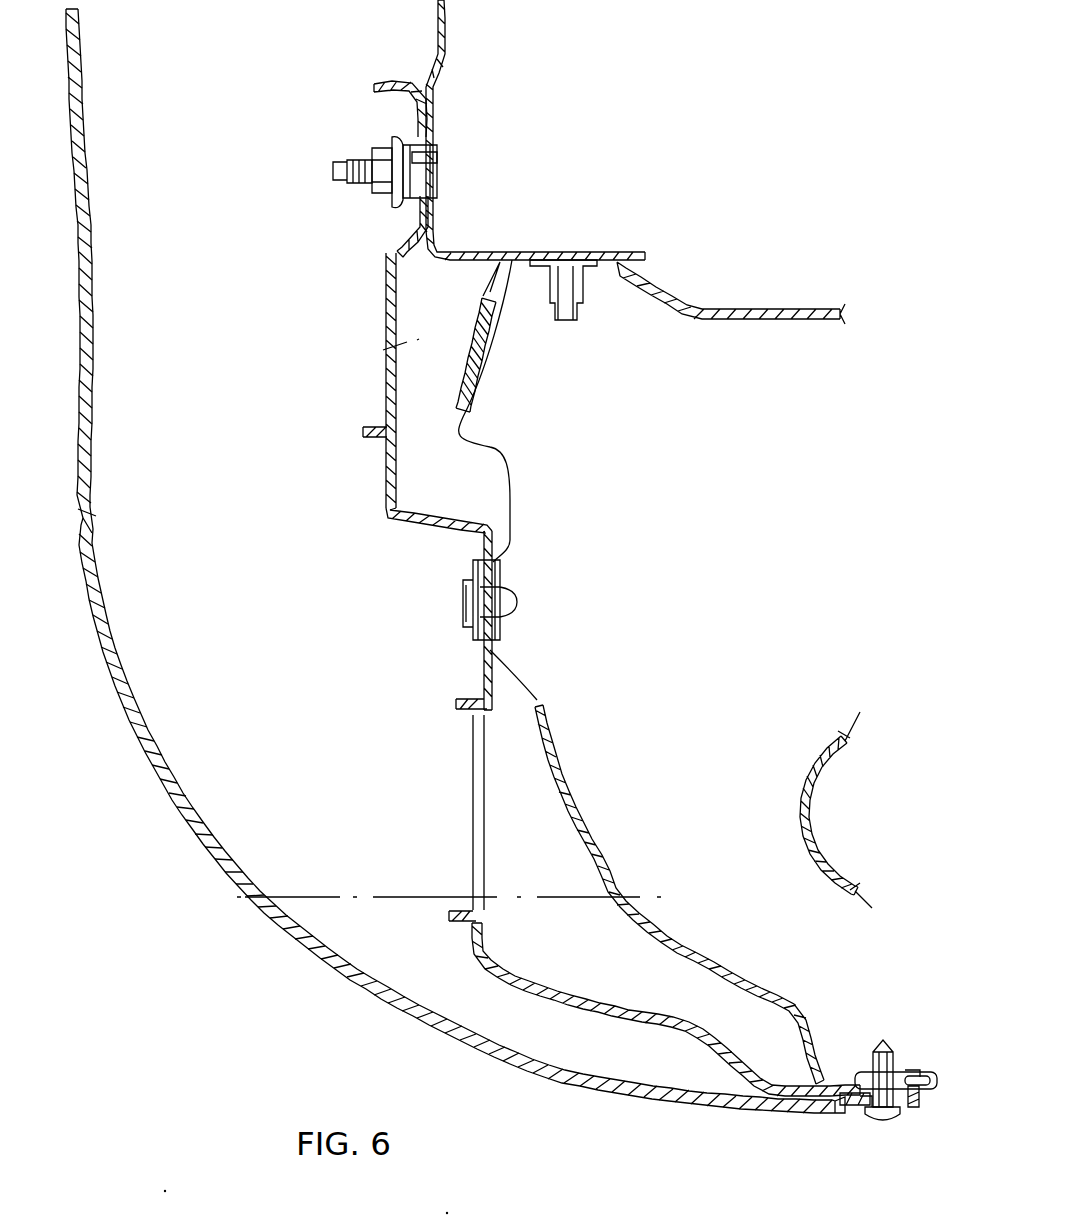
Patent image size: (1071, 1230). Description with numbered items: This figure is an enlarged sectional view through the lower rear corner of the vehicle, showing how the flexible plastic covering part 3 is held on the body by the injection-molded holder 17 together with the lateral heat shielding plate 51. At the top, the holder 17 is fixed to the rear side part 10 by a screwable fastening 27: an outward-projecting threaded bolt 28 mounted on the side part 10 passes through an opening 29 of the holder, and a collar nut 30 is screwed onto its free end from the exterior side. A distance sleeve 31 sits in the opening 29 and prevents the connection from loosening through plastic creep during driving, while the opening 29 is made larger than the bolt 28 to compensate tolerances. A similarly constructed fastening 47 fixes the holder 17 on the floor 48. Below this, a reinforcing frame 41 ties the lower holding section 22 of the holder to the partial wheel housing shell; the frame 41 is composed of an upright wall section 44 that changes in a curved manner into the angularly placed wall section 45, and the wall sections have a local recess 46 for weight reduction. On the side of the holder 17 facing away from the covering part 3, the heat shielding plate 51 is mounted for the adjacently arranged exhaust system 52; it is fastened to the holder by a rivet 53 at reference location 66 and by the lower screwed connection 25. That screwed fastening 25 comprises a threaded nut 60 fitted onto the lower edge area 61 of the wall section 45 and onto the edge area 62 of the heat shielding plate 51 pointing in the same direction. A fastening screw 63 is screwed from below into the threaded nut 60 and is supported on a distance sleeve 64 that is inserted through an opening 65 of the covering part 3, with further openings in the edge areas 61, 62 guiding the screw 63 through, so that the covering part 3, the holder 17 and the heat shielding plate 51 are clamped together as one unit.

The covering part 3 is at (100, 242).
The rear side part 10 is at (434, 220).
The holder 17 is at (383, 518).
The lower holding section 22 is at (797, 1082).
The screwed connection 25 is at (898, 1048).
The screwable fastening 27 is at (295, 160).
The threaded bolt 28 is at (340, 183).
The opening 29 is at (418, 157).
The collar nut 30 is at (380, 194).
The distance sleeve 31 is at (416, 207).
The reinforcing frame 41 is at (495, 957).
The wall section 44 is at (477, 677).
The wall section 45 is at (642, 1027).
The local recess 46 is at (470, 829).
The fastening 47 is at (383, 130).
The floor 48 is at (437, 163).
The heat shielding plate 51 is at (700, 939).
The exhaust system 52 is at (802, 765).
The rivet 53 is at (510, 588).
The threaded nut 60 is at (863, 1074).
The lower edge area 61 is at (912, 1108).
The edge area 62 is at (906, 1075).
The fastening screw 63 is at (876, 1121).
The distance sleeve 64 is at (856, 1108).
The opening 65 is at (861, 1114).
The rivet location 66 is at (541, 597).